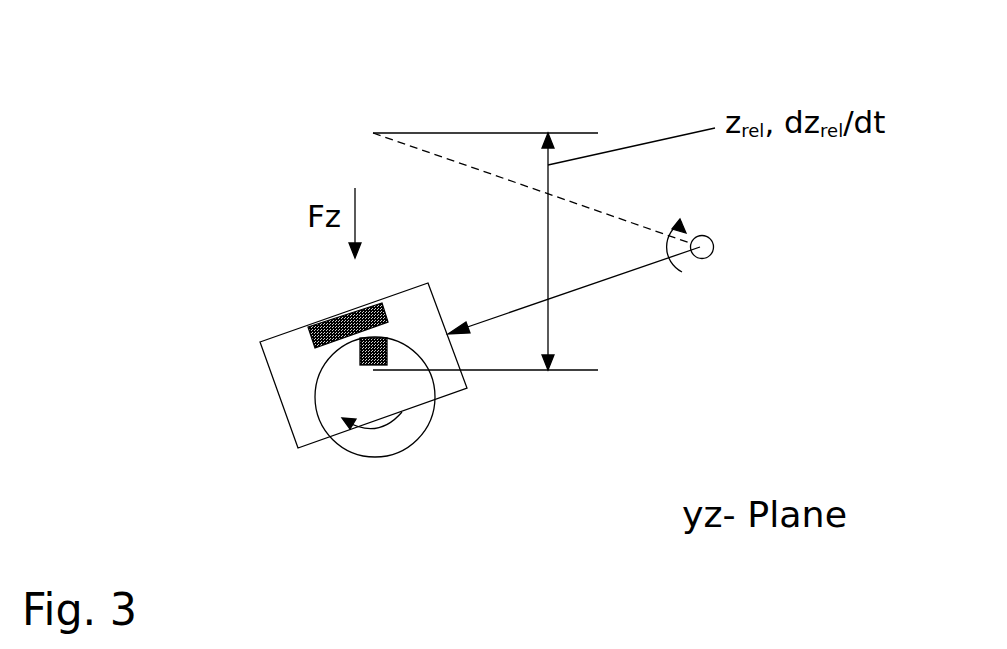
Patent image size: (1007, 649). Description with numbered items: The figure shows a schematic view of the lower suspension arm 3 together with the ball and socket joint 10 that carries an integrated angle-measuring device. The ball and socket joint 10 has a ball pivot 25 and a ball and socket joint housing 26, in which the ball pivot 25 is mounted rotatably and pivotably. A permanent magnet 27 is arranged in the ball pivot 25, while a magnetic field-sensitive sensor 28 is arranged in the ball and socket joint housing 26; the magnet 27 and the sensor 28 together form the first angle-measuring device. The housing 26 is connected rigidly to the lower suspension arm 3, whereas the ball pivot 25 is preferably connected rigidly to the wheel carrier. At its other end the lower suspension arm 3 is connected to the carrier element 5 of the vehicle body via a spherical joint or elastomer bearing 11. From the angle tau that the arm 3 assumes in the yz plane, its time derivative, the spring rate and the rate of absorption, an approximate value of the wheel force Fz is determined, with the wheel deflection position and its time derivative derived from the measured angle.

The sensor arrangement 10 is at (218, 153).
The road surface 5 is at (478, 133).
The housing 26 is at (282, 360).
The force sensor 28 is at (330, 320).
The torque sensor 27 is at (359, 343).
The wheel 25 is at (408, 403).
The arm 3 is at (618, 278).
The pivot joint 11 is at (709, 254).